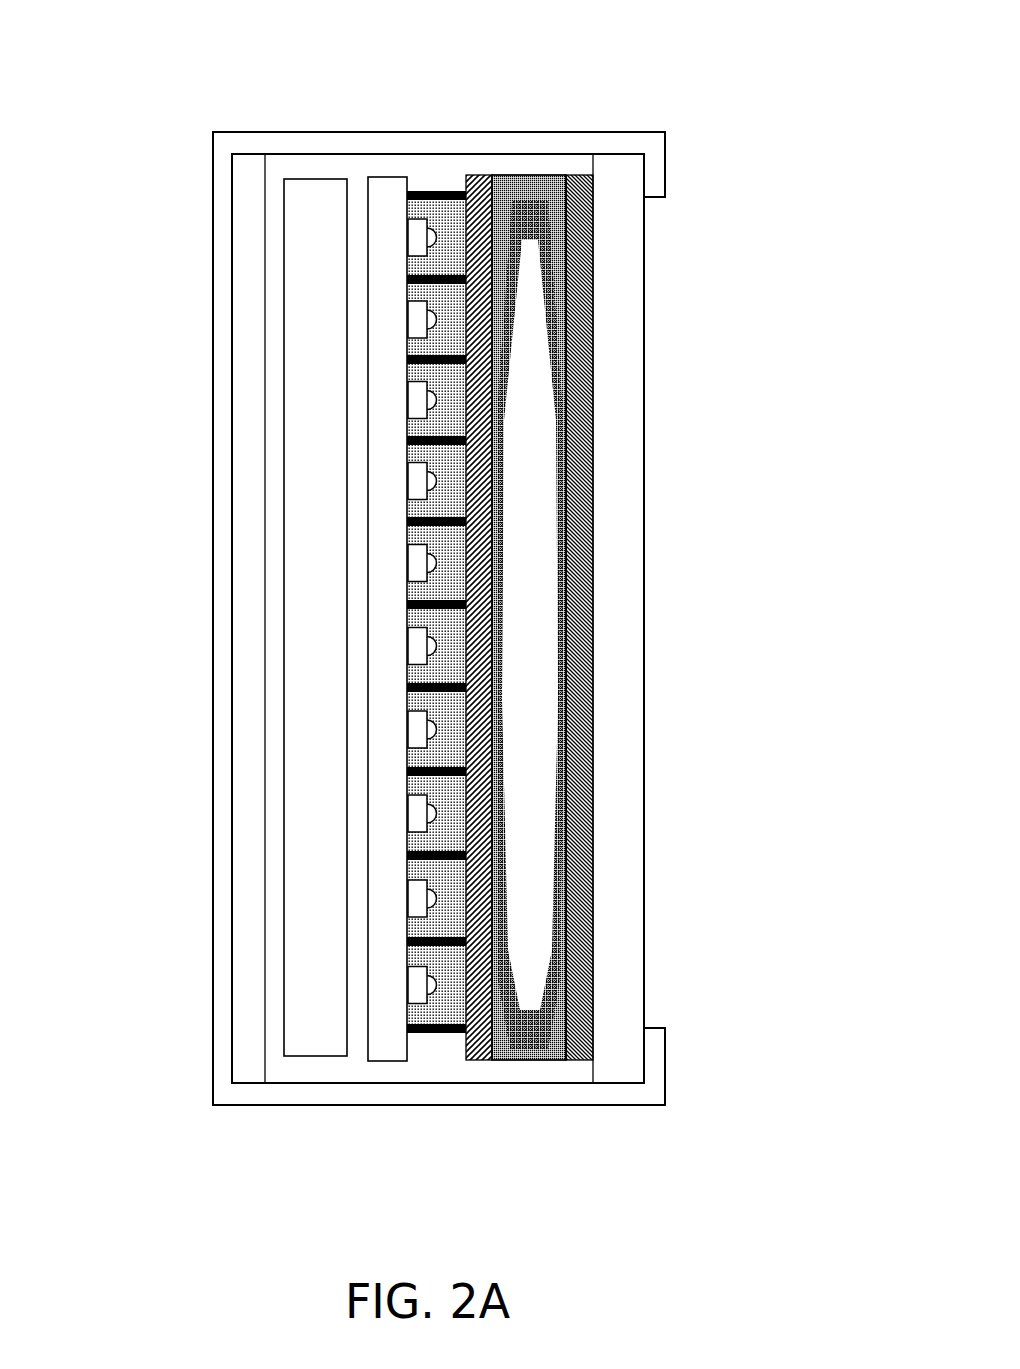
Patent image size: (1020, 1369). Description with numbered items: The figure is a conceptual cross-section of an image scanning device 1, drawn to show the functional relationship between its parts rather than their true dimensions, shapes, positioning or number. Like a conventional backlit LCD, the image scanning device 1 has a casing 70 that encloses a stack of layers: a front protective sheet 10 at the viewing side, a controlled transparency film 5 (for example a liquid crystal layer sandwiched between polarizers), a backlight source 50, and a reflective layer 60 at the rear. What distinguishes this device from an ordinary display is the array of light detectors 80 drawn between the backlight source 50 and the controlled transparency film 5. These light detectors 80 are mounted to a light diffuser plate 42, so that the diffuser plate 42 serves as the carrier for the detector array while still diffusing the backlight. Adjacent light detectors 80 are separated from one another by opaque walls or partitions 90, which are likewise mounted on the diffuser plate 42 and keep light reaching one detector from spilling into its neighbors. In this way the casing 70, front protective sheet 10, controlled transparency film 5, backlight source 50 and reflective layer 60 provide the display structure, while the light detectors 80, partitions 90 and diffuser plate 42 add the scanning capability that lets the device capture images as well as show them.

The image scanning device 1 is at (114, 26).
The controlled transparency film 5 is at (533, 178).
The front protective sheet 10 is at (644, 611).
The light diffuser plate 42 is at (392, 181).
The backlight source 50 is at (315, 617).
The reflective layer 60 is at (245, 842).
The casing 70 is at (665, 180).
The light detectors 80 is at (418, 232).
The opaque walls or partitions 90 is at (430, 1033).